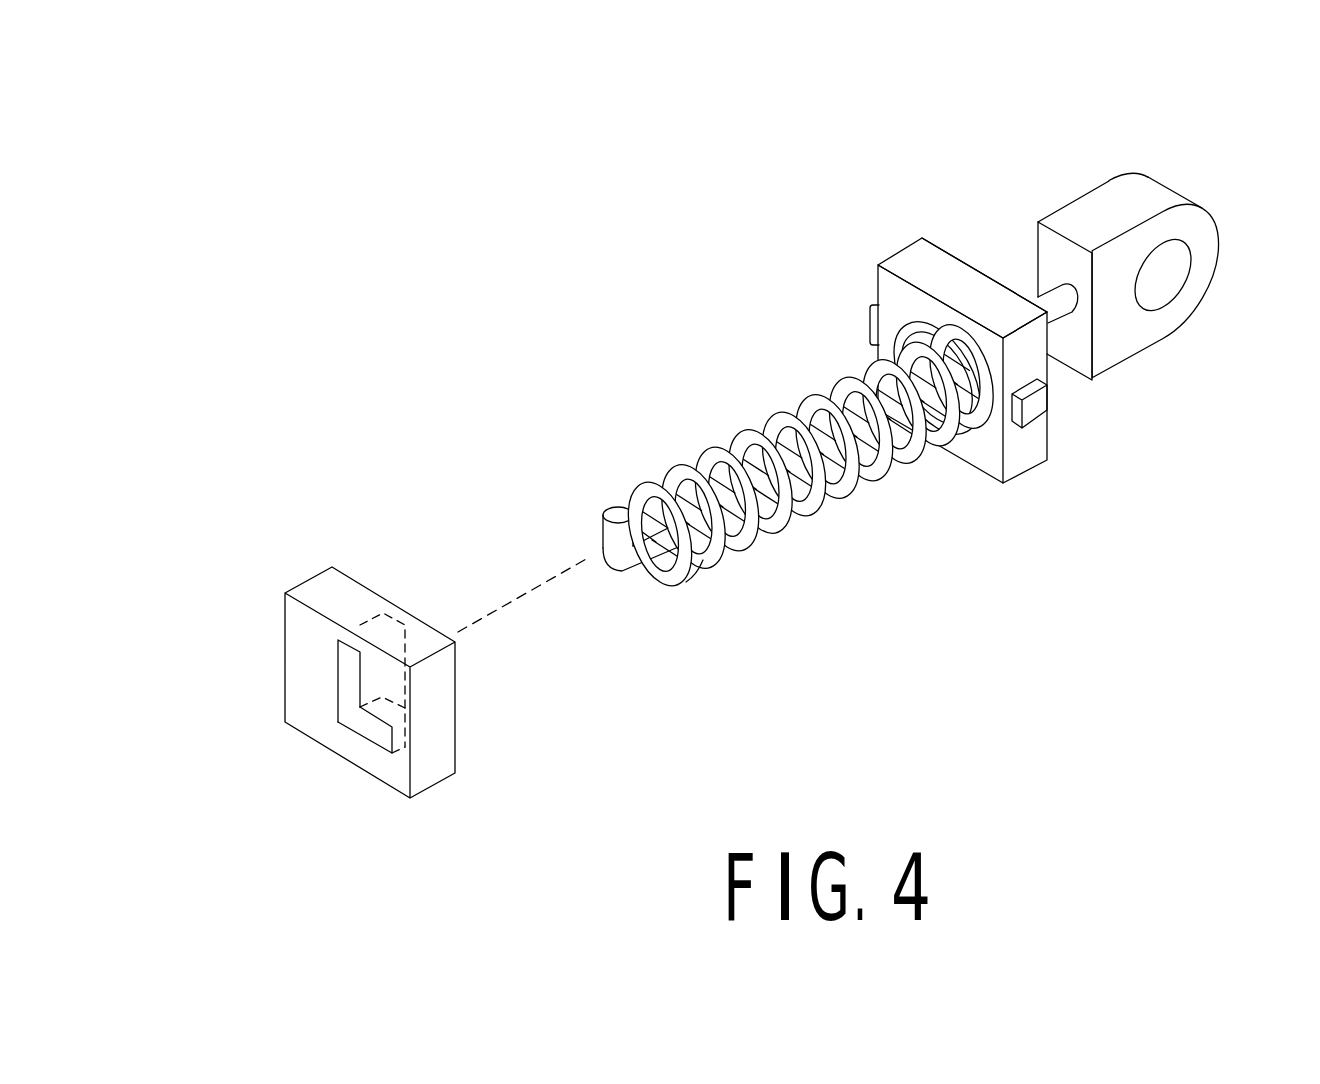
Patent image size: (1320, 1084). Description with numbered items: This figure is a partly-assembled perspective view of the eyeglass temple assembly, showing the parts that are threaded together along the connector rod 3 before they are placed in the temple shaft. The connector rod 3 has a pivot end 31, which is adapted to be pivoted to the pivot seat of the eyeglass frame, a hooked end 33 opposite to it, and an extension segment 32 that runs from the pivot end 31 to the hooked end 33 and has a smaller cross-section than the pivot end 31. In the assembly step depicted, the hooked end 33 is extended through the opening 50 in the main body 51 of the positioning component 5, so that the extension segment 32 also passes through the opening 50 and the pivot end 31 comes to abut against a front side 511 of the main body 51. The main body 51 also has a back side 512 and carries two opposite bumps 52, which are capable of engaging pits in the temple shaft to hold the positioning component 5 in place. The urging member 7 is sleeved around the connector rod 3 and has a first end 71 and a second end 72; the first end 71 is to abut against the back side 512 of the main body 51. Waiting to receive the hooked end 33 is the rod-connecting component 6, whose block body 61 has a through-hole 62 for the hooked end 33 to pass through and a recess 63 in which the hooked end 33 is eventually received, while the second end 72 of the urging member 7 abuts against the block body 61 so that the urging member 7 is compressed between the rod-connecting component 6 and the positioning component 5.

The connector rod 3 is at (641, 537).
The extension segment 32 is at (700, 550).
The hooked end 33 is at (606, 514).
The positioning component 5 is at (956, 313).
The opening 50 is at (955, 432).
The main body 51 is at (948, 275).
The front side 511 is at (998, 283).
The back side 512 is at (872, 318).
The bumps 52 is at (1035, 403).
The rod-connecting component 6 is at (276, 637).
The block body 61 is at (330, 583).
The through-hole 62 is at (340, 680).
The recess 63 is at (370, 728).
The urging member 7 is at (810, 448).
The first end 71 is at (952, 435).
The second end 72 is at (697, 582).
The pivot end 31 is at (1158, 308).